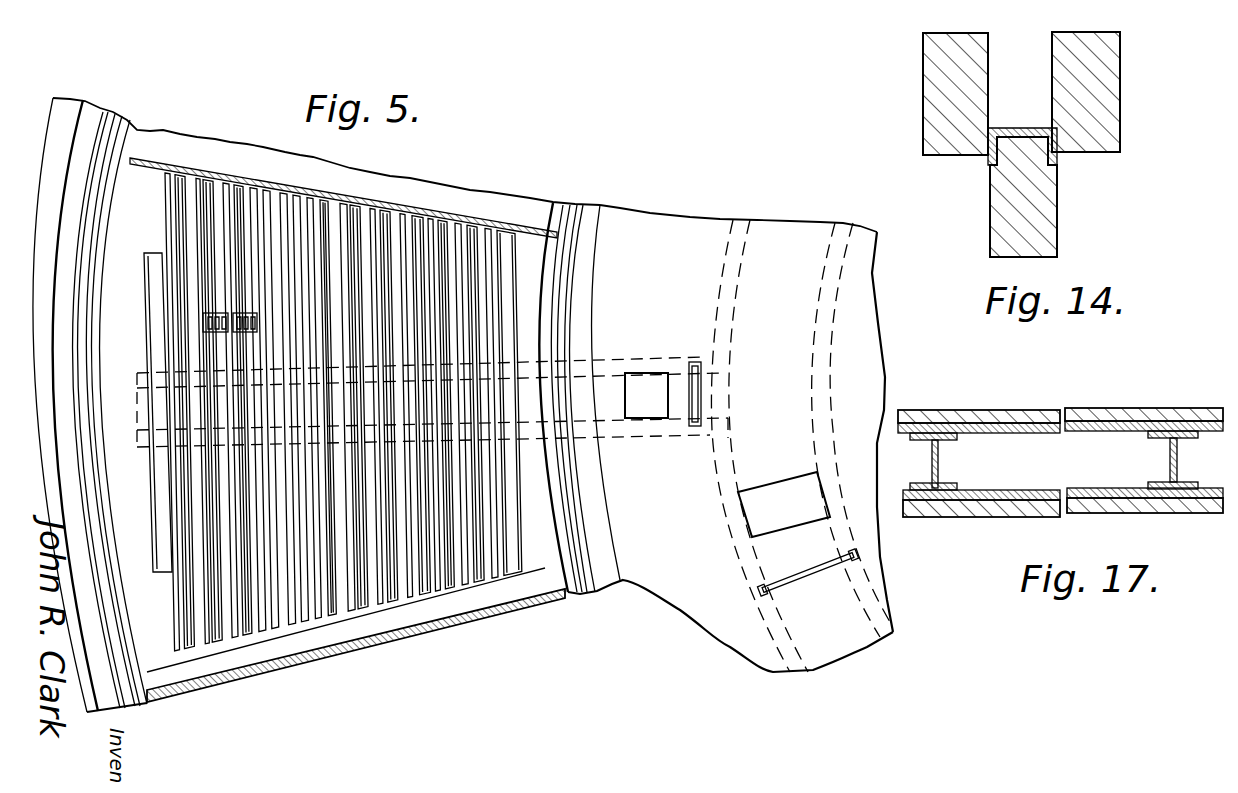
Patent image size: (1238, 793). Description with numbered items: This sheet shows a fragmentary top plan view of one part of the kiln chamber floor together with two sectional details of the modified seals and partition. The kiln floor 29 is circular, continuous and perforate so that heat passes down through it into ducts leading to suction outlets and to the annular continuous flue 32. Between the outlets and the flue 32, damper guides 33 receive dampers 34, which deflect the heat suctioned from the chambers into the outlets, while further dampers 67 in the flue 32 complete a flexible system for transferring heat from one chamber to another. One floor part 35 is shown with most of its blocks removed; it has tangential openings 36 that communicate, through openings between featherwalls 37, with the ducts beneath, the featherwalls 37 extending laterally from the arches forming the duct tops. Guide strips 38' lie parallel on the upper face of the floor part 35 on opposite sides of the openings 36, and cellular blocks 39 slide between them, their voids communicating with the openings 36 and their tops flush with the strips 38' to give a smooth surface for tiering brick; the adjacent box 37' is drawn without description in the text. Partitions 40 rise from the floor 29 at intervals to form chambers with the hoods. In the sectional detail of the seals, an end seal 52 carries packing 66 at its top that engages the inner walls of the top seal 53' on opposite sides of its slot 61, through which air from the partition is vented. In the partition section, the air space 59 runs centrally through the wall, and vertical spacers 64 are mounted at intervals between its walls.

In FIG. 5, the kiln floor 29 is at (572, 210).
In FIG. 5, the annular continuous flue 32 is at (808, 273).
In FIG. 5, the damper guides 33 is at (689, 361).
In FIG. 5, the dampers 34 is at (700, 395).
In FIG. 5, the floor part 35 is at (172, 655).
In FIG. 5, the tangential openings 36 is at (192, 571).
In FIG. 5, the featherwalls 37 is at (646, 395).
In FIG. 5, the outlet box 37' is at (784, 504).
In FIG. 5, the guide strips 38' is at (343, 436).
In FIG. 5, the cellular blocks 39 is at (240, 335).
In FIG. 5, the partitions 40 is at (388, 186).
In FIG. 17, the partitions 40 is at (1003, 413).
In FIG. 14, the end seals 52 is at (1057, 193).
In FIG. 14, the top seal 53' is at (1118, 92).
In FIG. 17, the air space 59 is at (1092, 465).
In FIG. 14, the slot 61 is at (1022, 66).
In FIG. 17, the spacers 64 is at (940, 464).
In FIG. 14, the packing 66 is at (1013, 128).
In FIG. 5, the dampers 67 is at (813, 574).